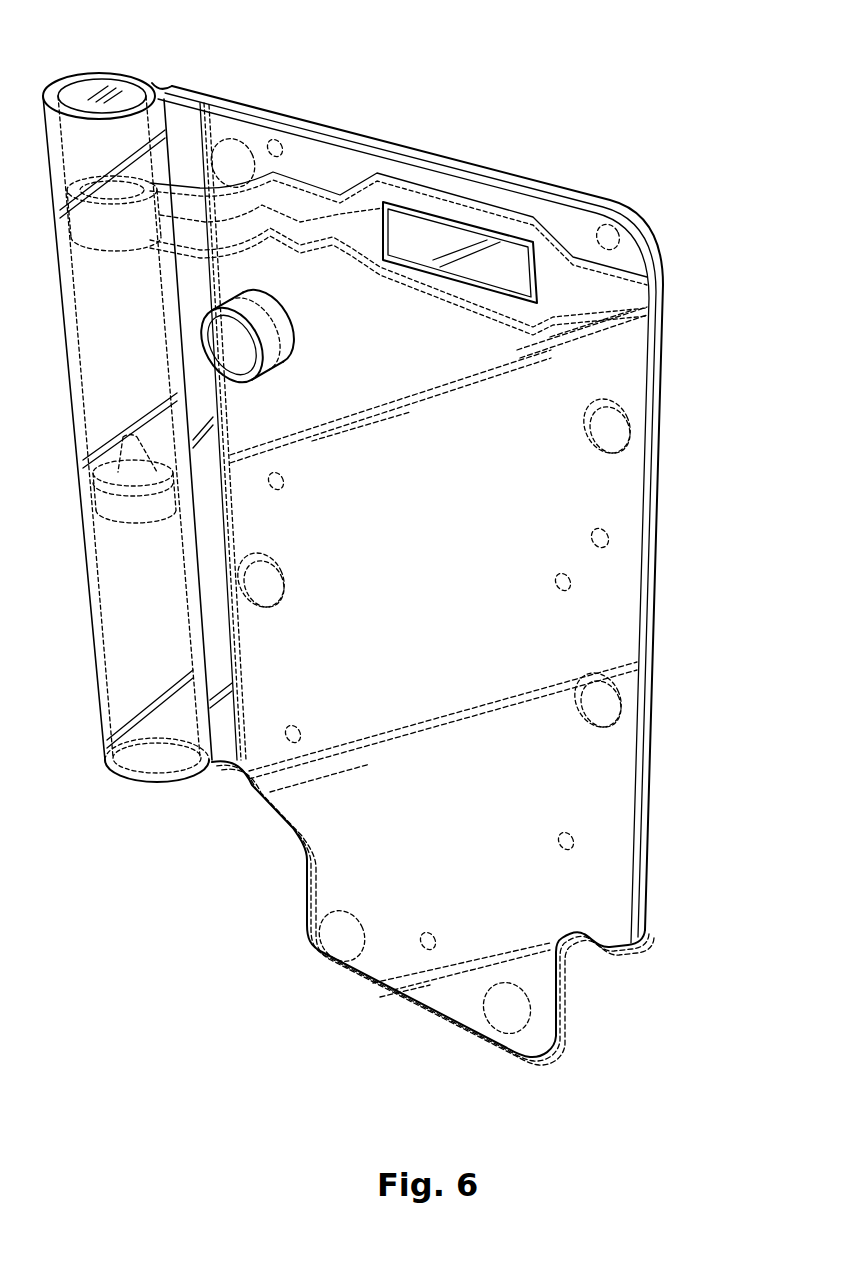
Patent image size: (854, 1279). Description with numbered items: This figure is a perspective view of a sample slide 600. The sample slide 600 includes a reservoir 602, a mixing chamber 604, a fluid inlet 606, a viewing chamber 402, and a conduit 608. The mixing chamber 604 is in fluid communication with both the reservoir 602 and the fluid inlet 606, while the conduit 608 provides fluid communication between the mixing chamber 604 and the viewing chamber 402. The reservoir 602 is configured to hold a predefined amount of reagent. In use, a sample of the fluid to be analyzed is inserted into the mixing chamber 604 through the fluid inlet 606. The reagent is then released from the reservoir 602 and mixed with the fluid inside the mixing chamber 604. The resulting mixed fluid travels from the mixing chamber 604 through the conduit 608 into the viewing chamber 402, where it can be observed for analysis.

The sample slide 600 is at (600, 135).
The reservoir 602 is at (120, 680).
The mixing chamber 604 is at (140, 336).
The fluid inlet 606 is at (103, 90).
The conduit 608 is at (330, 213).
The viewing chamber 402 is at (436, 258).